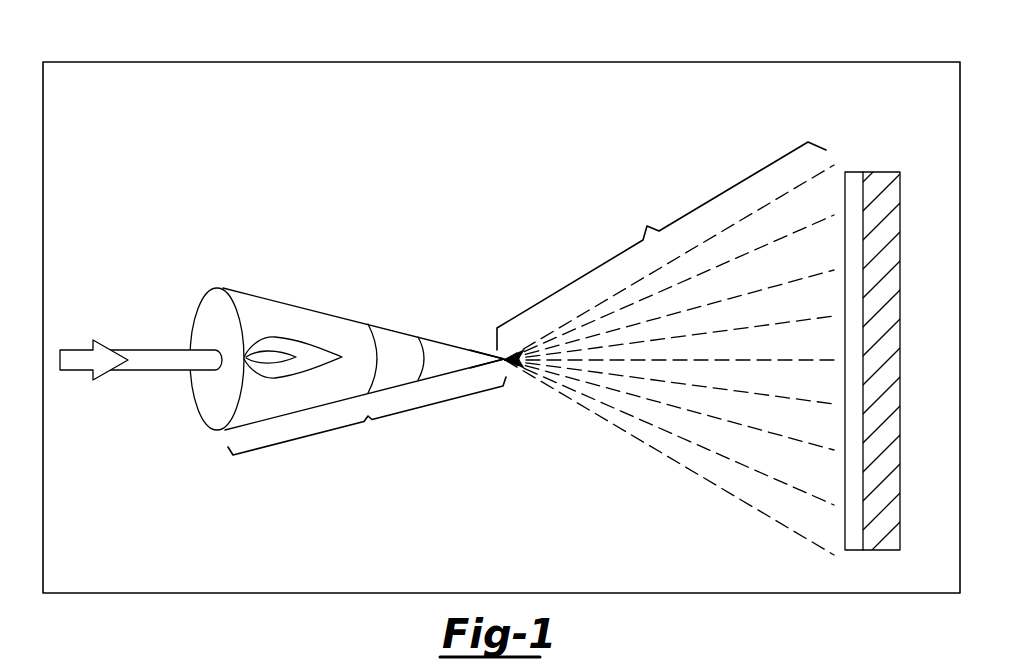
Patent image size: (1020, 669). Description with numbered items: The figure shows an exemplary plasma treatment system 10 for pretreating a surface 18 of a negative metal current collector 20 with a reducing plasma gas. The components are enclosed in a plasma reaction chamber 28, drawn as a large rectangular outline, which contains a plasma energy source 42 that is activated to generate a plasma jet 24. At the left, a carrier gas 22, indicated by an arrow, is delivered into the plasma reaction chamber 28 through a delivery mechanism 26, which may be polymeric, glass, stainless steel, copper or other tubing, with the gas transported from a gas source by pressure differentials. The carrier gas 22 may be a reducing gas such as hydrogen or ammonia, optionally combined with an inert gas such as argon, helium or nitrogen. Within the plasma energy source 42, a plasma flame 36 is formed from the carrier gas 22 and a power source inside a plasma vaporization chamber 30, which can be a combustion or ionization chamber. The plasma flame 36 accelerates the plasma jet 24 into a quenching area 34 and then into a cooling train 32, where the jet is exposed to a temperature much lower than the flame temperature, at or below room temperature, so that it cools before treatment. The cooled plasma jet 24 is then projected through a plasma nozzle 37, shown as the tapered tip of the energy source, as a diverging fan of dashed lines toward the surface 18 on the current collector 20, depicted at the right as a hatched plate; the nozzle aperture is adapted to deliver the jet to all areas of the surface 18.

The plasma treatment system 10 is at (405, 204).
The surface 18 is at (845, 193).
The negative metal current collector 20 is at (855, 215).
The carrier gas 22 is at (77, 362).
The plasma jet 24 is at (661, 246).
The delivery mechanism 26 is at (150, 358).
The plasma reaction chamber 28 is at (277, 62).
The plasma vaporization chamber 30 is at (305, 308).
The cooling train 32 is at (414, 334).
The quenching area 34 is at (398, 331).
The plasma flame 36 is at (298, 344).
The plasma nozzle 37 is at (463, 345).
The plasma energy source 42 is at (367, 419).